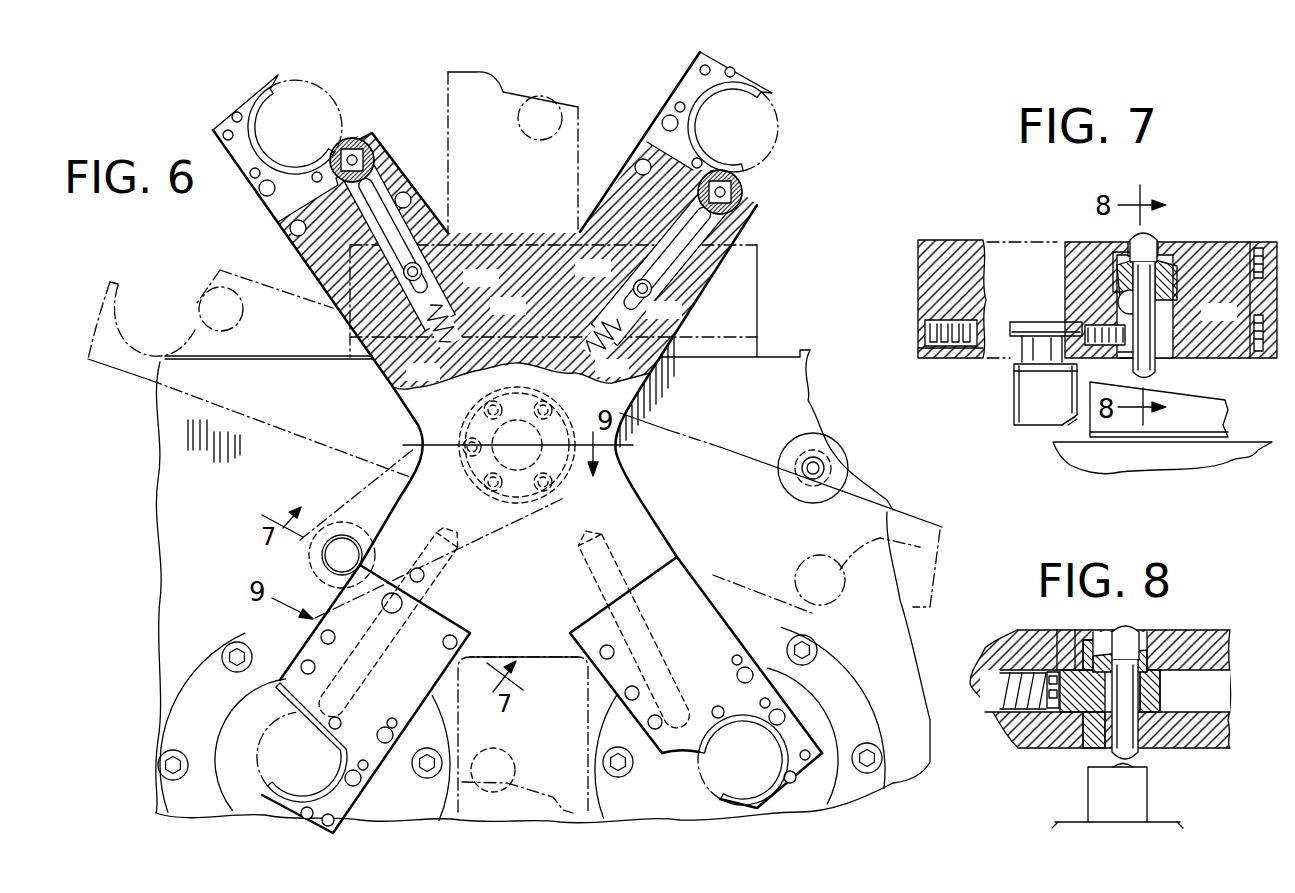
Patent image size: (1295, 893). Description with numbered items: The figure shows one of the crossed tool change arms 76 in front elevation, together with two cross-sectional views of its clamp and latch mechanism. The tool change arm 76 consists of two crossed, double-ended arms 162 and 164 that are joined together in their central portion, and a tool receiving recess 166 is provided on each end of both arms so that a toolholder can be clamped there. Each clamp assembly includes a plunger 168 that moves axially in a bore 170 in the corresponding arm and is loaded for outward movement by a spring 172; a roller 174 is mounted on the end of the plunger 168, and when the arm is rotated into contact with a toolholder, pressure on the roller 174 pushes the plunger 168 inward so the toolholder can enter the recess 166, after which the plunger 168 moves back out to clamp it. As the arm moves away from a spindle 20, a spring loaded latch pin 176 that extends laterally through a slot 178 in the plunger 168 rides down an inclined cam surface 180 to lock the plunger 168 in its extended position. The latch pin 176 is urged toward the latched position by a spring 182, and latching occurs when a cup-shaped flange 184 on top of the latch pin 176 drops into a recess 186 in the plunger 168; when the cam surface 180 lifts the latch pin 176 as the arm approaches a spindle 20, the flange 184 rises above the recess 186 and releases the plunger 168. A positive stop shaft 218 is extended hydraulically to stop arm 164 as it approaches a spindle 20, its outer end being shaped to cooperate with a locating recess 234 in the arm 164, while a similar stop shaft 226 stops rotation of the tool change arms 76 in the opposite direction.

In FIG. 6, the spindle 20 is at (232, 703).
In FIG. 6, the tool change arm 76 is at (390, 394).
In FIG. 6, the arm 162 is at (325, 238).
In FIG. 6, the arm 164 is at (607, 186).
In FIG. 6, the tool receiving recess 166 is at (270, 144).
In FIG. 6, the plunger 168 is at (443, 293).
In FIG. 7, the plunger 168 is at (1163, 304).
In FIG. 8, the plunger 168 is at (1053, 720).
In FIG. 6, the bore 170 is at (517, 261).
In FIG. 6, the spring 172 is at (470, 318).
In FIG. 8, the spring 172 is at (998, 683).
In FIG. 6, the roller 174 is at (348, 150).
In FIG. 7, the latch pin 176 is at (1147, 360).
In FIG. 8, the latch pin 176 is at (1127, 697).
In FIG. 7, the slot 178 is at (1120, 310).
In FIG. 7, the cam surface 180 is at (1200, 388).
In FIG. 8, the cam surface 180 is at (1140, 770).
In FIG. 7, the spring 182 is at (1160, 270).
In FIG. 8, the spring 182 is at (1140, 635).
In FIG. 7, the cup-shaped flange 184 is at (1178, 278).
In FIG. 8, the cup-shaped flange 184 is at (1157, 650).
In FIG. 7, the recess 186 is at (1117, 280).
In FIG. 8, the recess 186 is at (1068, 717).
In FIG. 6, the positive stop shaft 218 is at (338, 540).
In FIG. 7, the positive stop shaft 218 is at (1043, 394).
In FIG. 6, the stop shaft 226 is at (800, 445).
In FIG. 7, the locating recess 234 is at (1073, 353).